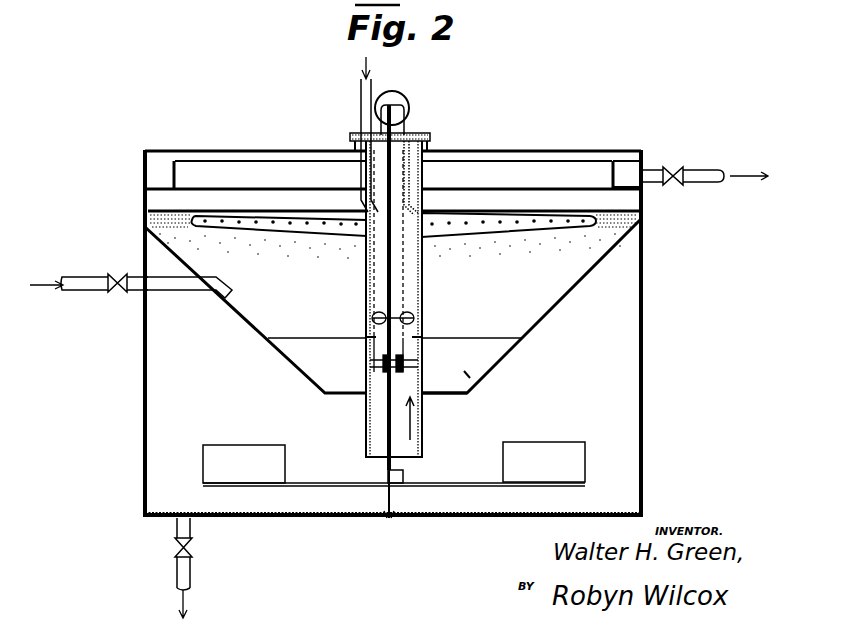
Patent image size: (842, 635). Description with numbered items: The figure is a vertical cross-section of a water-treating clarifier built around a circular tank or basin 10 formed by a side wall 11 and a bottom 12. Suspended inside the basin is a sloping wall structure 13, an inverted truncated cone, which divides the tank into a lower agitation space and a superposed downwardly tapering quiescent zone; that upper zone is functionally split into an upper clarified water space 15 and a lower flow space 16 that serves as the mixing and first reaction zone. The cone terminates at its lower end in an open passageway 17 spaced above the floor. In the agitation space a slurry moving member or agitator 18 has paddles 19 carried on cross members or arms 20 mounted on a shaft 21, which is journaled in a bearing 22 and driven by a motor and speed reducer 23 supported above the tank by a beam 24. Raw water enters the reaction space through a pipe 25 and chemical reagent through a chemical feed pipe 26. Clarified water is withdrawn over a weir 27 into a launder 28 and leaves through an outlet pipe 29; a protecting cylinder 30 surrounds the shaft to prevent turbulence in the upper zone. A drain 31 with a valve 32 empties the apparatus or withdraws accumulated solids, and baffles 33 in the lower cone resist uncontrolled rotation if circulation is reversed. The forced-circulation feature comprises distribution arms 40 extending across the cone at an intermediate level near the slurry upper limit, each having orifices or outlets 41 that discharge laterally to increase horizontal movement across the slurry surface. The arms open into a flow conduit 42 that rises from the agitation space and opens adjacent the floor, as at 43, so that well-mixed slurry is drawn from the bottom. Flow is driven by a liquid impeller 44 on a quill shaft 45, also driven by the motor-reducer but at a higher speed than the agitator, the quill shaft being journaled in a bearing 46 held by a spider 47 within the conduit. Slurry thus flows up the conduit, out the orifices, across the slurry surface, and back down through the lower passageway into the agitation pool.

The tank or basin 10 is at (560, 160).
The side wall 11 is at (645, 230).
The bottom 12 is at (348, 519).
The sloping wall structure 13 is at (581, 280).
The clarified water space 15 is at (277, 200).
The flow space 16 is at (498, 318).
The open passageway 17 is at (450, 397).
The slurry moving member or agitator 18 is at (400, 487).
The paddles 19 is at (240, 446).
The cross members or arms 20 is at (323, 483).
The shaft 21 is at (385, 467).
The bearing 22 is at (398, 519).
The motor and speed reducer 23 is at (392, 110).
The beam 24 is at (425, 135).
The pipe 25 is at (90, 277).
The chemical feed pipe 26 is at (362, 97).
The weir 27 is at (613, 160).
The launder 28 is at (642, 162).
The outlet pipe 29 is at (703, 172).
The protecting cylinder 30 is at (404, 178).
The drain 31 is at (178, 530).
The valve 32 is at (193, 546).
The baffles 33 is at (472, 375).
The distribution arms 40 is at (262, 236).
The orifices or outlets 41 is at (322, 220).
The flow conduit 42 is at (424, 262).
The conduit opening 43 is at (418, 457).
The liquid impeller 44 is at (413, 318).
The quill shaft 45 is at (388, 270).
The bearing 46 is at (383, 373).
The spider 47 is at (408, 357).